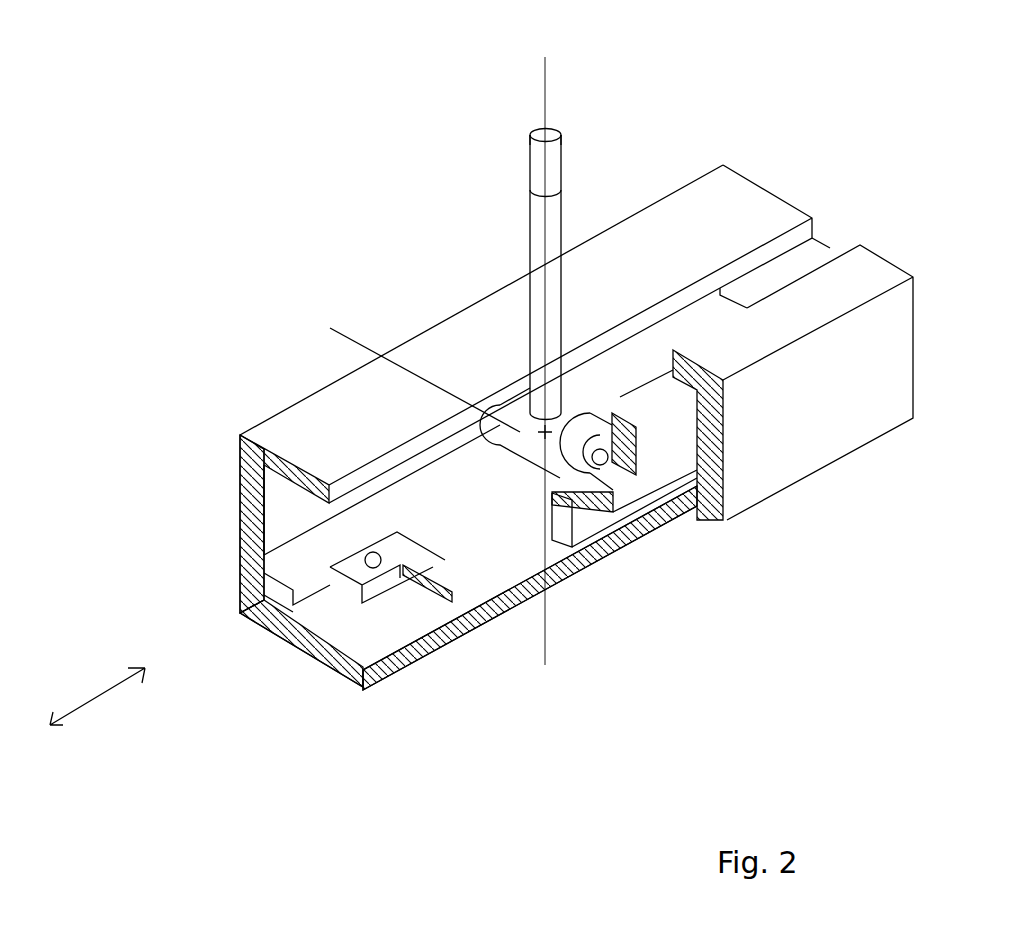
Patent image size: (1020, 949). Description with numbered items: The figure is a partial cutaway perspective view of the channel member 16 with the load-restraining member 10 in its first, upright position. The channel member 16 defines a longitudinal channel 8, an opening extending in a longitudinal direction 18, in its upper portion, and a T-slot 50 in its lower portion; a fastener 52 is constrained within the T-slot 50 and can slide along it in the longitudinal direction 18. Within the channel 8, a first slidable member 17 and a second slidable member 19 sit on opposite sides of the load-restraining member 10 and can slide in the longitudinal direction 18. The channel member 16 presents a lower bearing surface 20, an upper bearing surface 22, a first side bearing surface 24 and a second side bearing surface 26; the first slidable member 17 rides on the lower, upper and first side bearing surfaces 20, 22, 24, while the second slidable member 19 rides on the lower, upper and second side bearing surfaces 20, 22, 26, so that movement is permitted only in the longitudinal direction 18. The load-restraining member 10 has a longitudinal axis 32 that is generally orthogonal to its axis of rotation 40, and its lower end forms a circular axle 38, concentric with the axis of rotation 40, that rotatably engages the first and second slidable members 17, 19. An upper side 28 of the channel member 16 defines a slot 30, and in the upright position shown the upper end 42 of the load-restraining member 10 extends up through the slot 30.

The channel 8 is at (323, 535).
The load-restraining member 10 is at (535, 238).
The channel member 16 is at (810, 425).
The first slidable member 17 is at (470, 447).
The longitudinal direction 18 is at (98, 697).
The second slidable member 19 is at (627, 497).
The lower bearing surface 20 is at (282, 565).
The upper bearing surface 22 is at (277, 478).
The first side bearing surface 24 is at (268, 508).
The second side bearing surface 26 is at (677, 353).
The upper side 28 is at (685, 230).
The slot 30 is at (828, 237).
The longitudinal axis 32 is at (547, 102).
The circular axle 38 is at (600, 465).
The axis of rotation 40 is at (362, 342).
The upper end 42 is at (550, 130).
The T-slot 50 is at (273, 608).
The fastener 52 is at (343, 593).